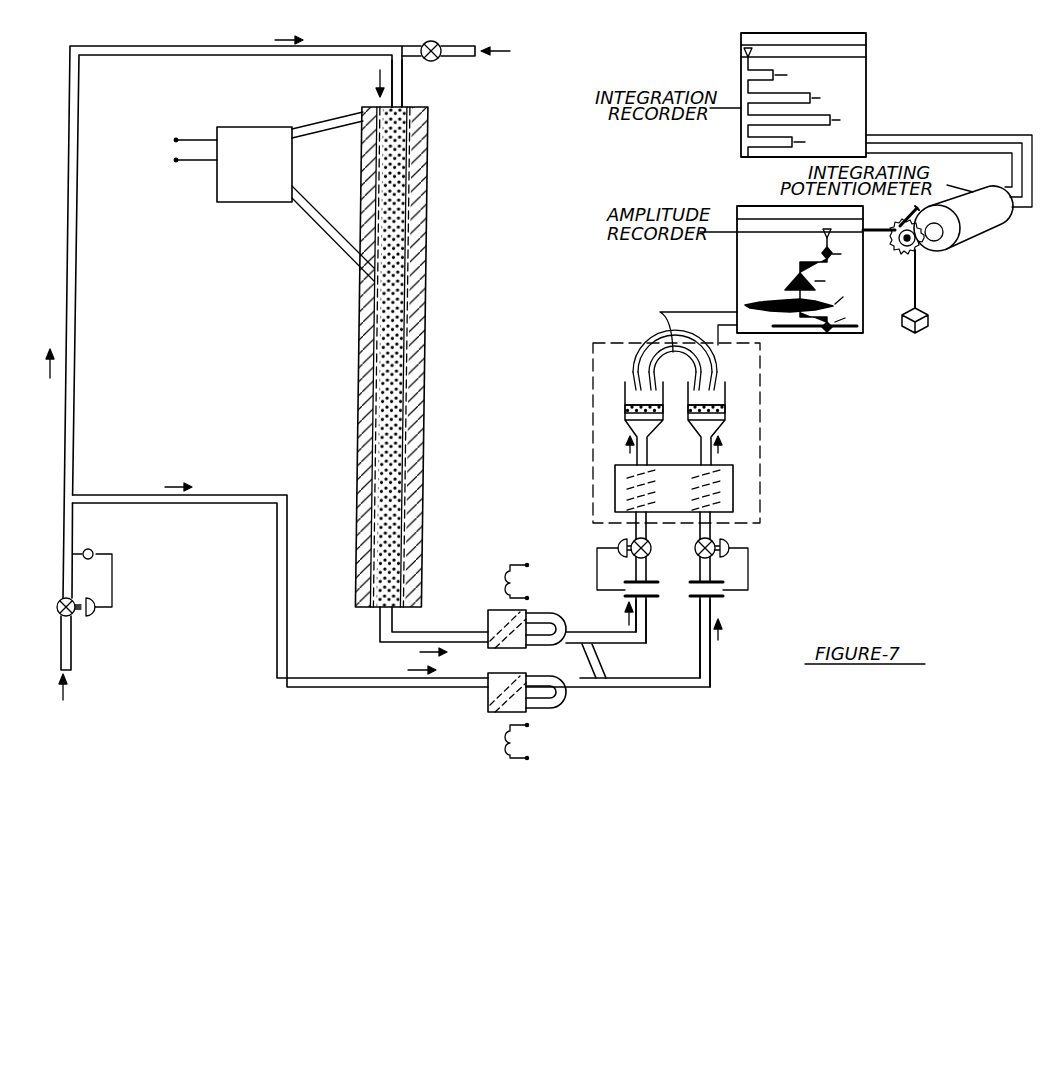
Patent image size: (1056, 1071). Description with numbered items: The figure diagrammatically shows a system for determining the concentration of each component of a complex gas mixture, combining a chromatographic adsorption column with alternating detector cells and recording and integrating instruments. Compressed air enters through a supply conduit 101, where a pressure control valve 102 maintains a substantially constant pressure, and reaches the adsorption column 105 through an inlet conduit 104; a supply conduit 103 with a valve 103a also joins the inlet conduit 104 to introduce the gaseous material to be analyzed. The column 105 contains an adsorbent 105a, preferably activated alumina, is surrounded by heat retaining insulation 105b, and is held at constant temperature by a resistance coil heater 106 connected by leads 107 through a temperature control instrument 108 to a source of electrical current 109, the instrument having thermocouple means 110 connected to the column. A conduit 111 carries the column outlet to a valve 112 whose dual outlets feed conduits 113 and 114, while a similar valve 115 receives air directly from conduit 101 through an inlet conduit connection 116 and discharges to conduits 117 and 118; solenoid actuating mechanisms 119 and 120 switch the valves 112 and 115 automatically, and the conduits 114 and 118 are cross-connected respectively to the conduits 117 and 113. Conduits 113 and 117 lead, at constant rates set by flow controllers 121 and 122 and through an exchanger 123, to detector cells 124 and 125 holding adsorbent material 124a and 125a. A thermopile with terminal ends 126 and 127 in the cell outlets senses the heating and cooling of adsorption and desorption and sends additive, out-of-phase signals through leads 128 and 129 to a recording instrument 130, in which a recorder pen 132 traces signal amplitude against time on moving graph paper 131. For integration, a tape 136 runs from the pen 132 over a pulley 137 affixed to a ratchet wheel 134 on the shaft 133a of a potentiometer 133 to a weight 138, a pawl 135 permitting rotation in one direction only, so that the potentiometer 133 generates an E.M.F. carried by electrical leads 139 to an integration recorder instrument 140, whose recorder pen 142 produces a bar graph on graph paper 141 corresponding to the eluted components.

The supply conduit 101 is at (72, 653).
The pressure control valve 102 is at (100, 612).
The supply conduit 103 is at (463, 49).
The valve 103a is at (426, 47).
The inlet conduit 104 is at (403, 82).
The adsorption column 105 is at (405, 172).
The adsorbent 105a is at (398, 207).
The heat retaining insulation 105b is at (430, 135).
The resistance coil heater 106 is at (412, 240).
The leads 107 is at (342, 120).
The temperature control instrument 108 is at (253, 130).
The source of electrical current 109 is at (193, 162).
The thermocouple means 110 is at (320, 222).
The conduit 111 is at (478, 632).
The valve 112 is at (490, 612).
The conduit 113 is at (646, 618).
The conduit 114 is at (548, 614).
The valve 115 is at (485, 701).
The inlet conduit connection 116 is at (277, 607).
The conduit 117 is at (652, 693).
The conduit 118 is at (578, 696).
The solenoid actuating mechanism 119 is at (515, 585).
The solenoid actuating mechanism 120 is at (522, 740).
The flow controller 121 is at (630, 593).
The flow controller 122 is at (720, 593).
The heat exchanger 123 is at (733, 487).
The detector cell 124 is at (625, 388).
The adsorbent material 124a is at (625, 408).
The detector cell 125 is at (725, 388).
The adsorbent material 125a is at (725, 408).
The terminal end 126 is at (643, 382).
The terminal end 127 is at (712, 382).
The lead 128 is at (690, 310).
The lead 129 is at (719, 338).
The recording instrument 130 is at (737, 262).
The graph paper 131 is at (748, 283).
The recorder pen 132 is at (822, 230).
The potentiometer 133 is at (980, 228).
The shaft 133a is at (936, 240).
The ratchet wheel 134 is at (922, 248).
The pawl 135 is at (906, 212).
The tape 136 is at (913, 293).
The pulley 137 is at (903, 250).
The weight 138 is at (930, 322).
The electrical leads 139 is at (953, 143).
The integration recorder instrument 140 is at (870, 108).
The graph paper 141 is at (850, 78).
The recorder pen 142 is at (745, 50).